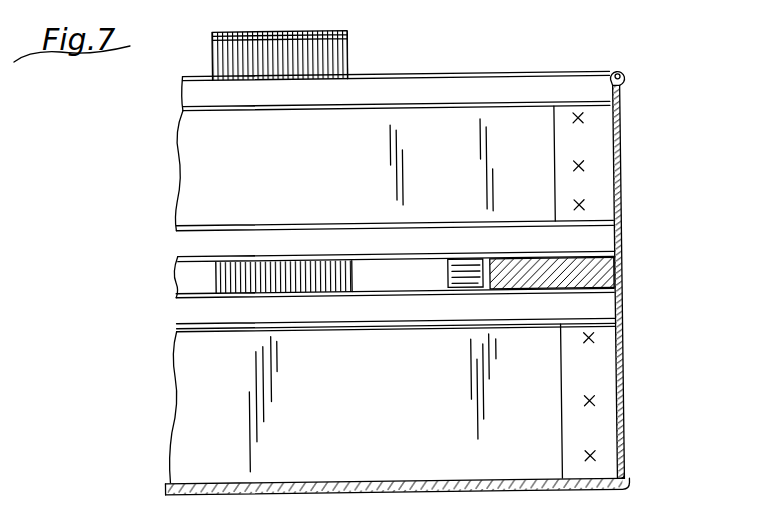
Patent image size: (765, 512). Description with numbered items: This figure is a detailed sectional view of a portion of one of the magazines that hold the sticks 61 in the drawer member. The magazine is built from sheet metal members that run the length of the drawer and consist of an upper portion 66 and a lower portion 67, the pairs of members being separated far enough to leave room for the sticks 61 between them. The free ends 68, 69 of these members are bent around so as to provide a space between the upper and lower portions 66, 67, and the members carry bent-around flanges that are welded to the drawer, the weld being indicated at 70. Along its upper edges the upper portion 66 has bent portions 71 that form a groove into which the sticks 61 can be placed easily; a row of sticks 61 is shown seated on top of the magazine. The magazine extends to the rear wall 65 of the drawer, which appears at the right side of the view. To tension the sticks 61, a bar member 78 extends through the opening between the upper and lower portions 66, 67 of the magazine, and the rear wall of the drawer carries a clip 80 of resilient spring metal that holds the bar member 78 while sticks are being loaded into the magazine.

The sticks 61 is at (352, 45).
The rear wall 65 is at (622, 383).
The upper portion 66 is at (344, 184).
The lower portion 67 is at (360, 393).
The free end 68 is at (176, 330).
The free end 69 is at (176, 237).
The weld 70 is at (612, 152).
The bent portion 71 is at (190, 105).
The bar member 78 is at (607, 273).
The clip 80 is at (472, 285).